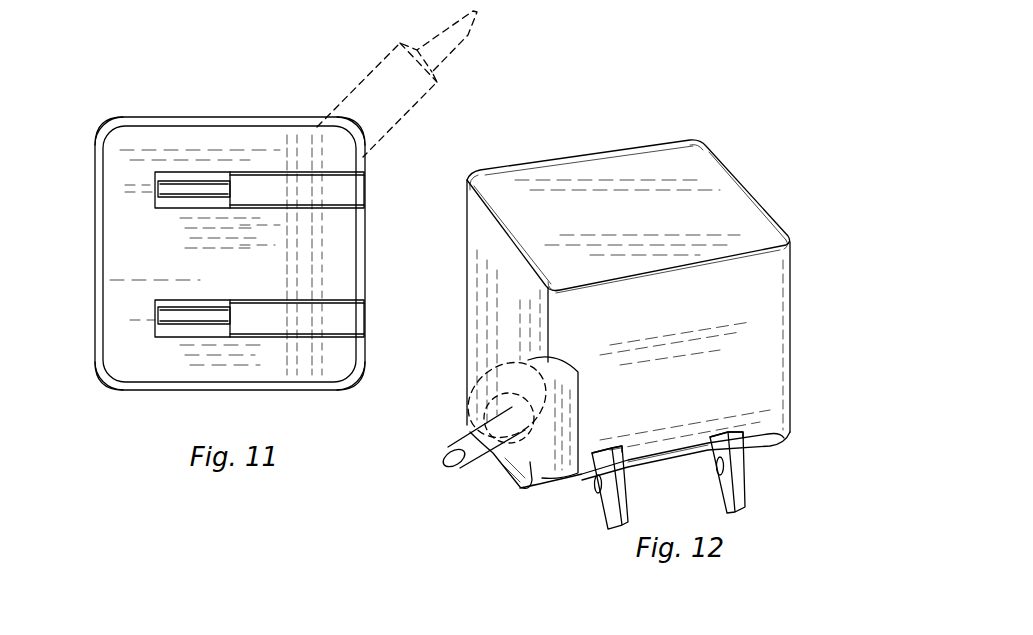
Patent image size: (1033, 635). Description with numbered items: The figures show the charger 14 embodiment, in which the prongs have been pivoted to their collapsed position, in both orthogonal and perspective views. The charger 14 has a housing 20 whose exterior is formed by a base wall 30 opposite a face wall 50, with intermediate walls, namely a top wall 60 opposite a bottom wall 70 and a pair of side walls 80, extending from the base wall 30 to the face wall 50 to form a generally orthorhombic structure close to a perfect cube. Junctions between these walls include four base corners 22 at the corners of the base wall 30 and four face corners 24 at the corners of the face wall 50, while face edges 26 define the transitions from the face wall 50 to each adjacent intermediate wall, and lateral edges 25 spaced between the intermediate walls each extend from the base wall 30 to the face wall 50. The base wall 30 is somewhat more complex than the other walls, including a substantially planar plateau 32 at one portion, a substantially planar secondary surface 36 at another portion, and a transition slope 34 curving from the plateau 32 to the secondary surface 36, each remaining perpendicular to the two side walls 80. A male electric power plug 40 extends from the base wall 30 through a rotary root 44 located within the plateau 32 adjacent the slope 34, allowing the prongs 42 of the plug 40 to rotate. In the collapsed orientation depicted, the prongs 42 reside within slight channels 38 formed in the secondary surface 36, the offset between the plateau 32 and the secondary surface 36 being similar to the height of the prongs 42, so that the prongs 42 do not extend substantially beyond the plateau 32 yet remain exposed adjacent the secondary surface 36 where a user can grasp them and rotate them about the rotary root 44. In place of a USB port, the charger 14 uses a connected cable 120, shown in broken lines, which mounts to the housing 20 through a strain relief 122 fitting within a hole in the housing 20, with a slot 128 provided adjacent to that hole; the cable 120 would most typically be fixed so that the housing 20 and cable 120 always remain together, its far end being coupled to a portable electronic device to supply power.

In FIG. 11, the charger 14 is at (121, 92).
In FIG. 12, the charger 14 is at (685, 118).
In FIG. 11, the housing 20 is at (75, 226).
In FIG. 12, the housing 20 is at (800, 328).
In FIG. 12, the base corners 22 is at (468, 427).
In FIG. 12, the face corners 24 is at (468, 176).
In FIG. 11, the lateral edges 25 is at (108, 125).
In FIG. 12, the lateral edges 25 is at (565, 340).
In FIG. 12, the face edges 26 is at (588, 150).
In FIG. 11, the base wall 30 is at (192, 233).
In FIG. 12, the base wall 30 is at (511, 489).
In FIG. 11, the plateau 32 is at (195, 257).
In FIG. 12, the plateau 32 is at (493, 464).
In FIG. 11, the transition slope 34 is at (306, 250).
In FIG. 12, the transition slope 34 is at (526, 490).
In FIG. 11, the secondary surface 36 is at (340, 275).
In FIG. 12, the secondary surface 36 is at (668, 465).
In FIG. 11, the channels 38 is at (332, 191).
In FIG. 12, the channels 38 is at (625, 456).
In FIG. 11, the male electric power plug 40 is at (232, 166).
In FIG. 12, the male electric power plug 40 is at (583, 522).
In FIG. 11, the prongs 42 is at (176, 184).
In FIG. 12, the prongs 42 is at (612, 498).
In FIG. 11, the rotary root 44 is at (165, 202).
In FIG. 12, the face wall 50 is at (627, 217).
In FIG. 11, the top wall 60 is at (360, 283).
In FIG. 12, the top wall 60 is at (685, 373).
In FIG. 11, the bottom wall 70 is at (95, 308).
In FIG. 12, the bottom wall 70 is at (528, 163).
In FIG. 11, the side walls 80 is at (207, 120).
In FIG. 12, the side walls 80 is at (797, 385).
In FIG. 11, the connected cable 120 is at (478, 56).
In FIG. 11, the strain relief 122 is at (412, 128).
In FIG. 12, the strain relief 122 is at (478, 358).
In FIG. 12, the slot 128 is at (585, 412).